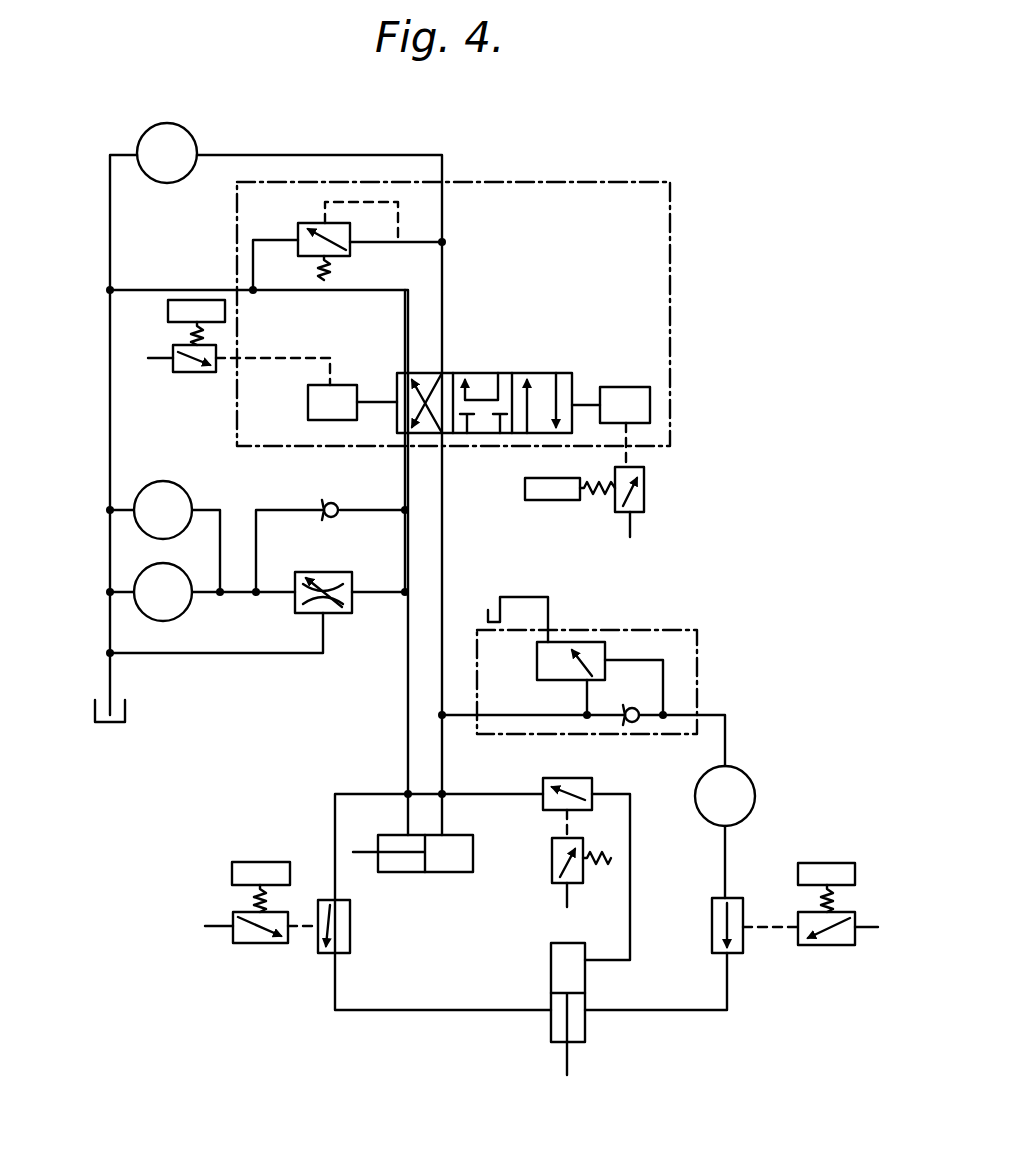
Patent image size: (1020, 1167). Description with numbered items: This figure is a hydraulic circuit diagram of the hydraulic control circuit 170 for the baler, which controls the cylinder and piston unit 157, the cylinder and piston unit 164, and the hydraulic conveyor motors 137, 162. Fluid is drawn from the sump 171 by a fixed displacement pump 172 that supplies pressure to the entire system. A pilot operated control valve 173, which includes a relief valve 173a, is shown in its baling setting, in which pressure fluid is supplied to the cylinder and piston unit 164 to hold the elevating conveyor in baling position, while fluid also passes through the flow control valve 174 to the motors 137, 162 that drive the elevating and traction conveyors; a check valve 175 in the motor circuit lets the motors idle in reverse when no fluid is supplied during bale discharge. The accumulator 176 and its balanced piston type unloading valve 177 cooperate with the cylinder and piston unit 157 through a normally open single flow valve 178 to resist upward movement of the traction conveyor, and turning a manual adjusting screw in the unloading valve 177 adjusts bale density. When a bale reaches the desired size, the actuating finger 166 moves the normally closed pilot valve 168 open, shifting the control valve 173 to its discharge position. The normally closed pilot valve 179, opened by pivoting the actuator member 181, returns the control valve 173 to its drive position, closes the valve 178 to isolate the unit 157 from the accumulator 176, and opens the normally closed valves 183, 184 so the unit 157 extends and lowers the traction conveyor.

The hydraulic elevating conveyor motor 137 is at (173, 613).
The cylinder and piston unit 157 is at (585, 1035).
The motor 162 is at (168, 472).
The cylinder and piston unit 164 is at (440, 873).
The actuating finger 166 is at (225, 311).
The pilot valve 168 is at (180, 373).
The hydraulic control circuit 170 is at (522, 156).
The sump 171 is at (128, 715).
The fixed displacement pump 172 is at (178, 130).
The pilot operated control valve 173 is at (513, 373).
The relief valve 173a is at (300, 228).
The flow control valve 174 is at (343, 613).
The check valve 175 is at (336, 502).
The accumulator 176 is at (752, 790).
The balanced piston type unloading valve 177 is at (598, 645).
The normally open single flow valve 178 is at (743, 902).
The normally closed pilot valve 179 is at (644, 498).
The actuator member 181 is at (553, 502).
The normally closed valve 183 is at (350, 940).
The normally closed valve 184 is at (578, 780).